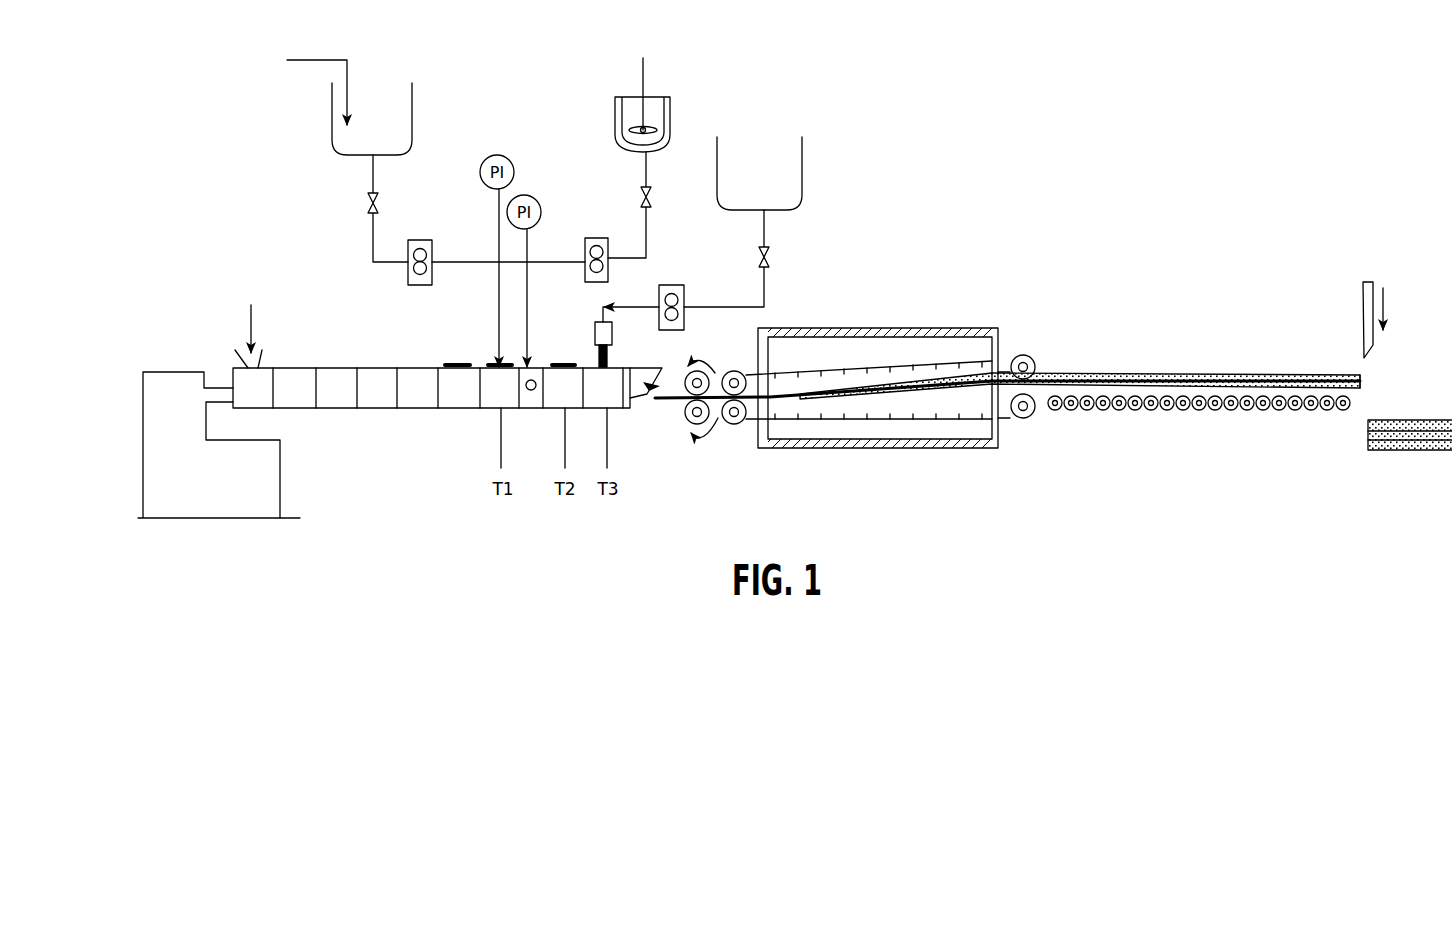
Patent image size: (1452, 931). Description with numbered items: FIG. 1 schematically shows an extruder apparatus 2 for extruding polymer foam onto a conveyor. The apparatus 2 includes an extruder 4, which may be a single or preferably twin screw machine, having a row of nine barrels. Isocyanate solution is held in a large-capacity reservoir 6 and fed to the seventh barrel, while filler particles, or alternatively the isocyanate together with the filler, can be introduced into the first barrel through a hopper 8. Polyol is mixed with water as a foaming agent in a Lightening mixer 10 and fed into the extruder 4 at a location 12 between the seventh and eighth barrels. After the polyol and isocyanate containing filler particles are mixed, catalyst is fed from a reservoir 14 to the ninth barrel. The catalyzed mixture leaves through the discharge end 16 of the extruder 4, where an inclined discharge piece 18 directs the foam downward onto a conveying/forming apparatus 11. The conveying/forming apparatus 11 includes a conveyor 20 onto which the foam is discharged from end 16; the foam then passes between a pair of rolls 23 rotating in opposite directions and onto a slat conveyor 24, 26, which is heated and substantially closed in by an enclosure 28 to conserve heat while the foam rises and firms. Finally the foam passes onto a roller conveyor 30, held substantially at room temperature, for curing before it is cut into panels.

The extruder apparatus 2 is at (699, 357).
The extruder 4 is at (380, 413).
The reservoir 6 is at (336, 150).
The hopper 8 is at (264, 358).
The Lightening mixer 10 is at (672, 112).
The conveying/forming apparatus 11 is at (1151, 372).
The location 12 is at (536, 376).
The reservoir 14 is at (803, 190).
The discharge end 16 is at (664, 385).
The inclined discharge piece 18 is at (650, 402).
The conveyor 20 is at (1242, 373).
The pair of rolls 23 is at (689, 421).
The slat conveyor 24 is at (1024, 420).
The slat conveyor 26 is at (1025, 355).
The enclosure 28 is at (876, 328).
The roller conveyor 30 is at (1203, 410).